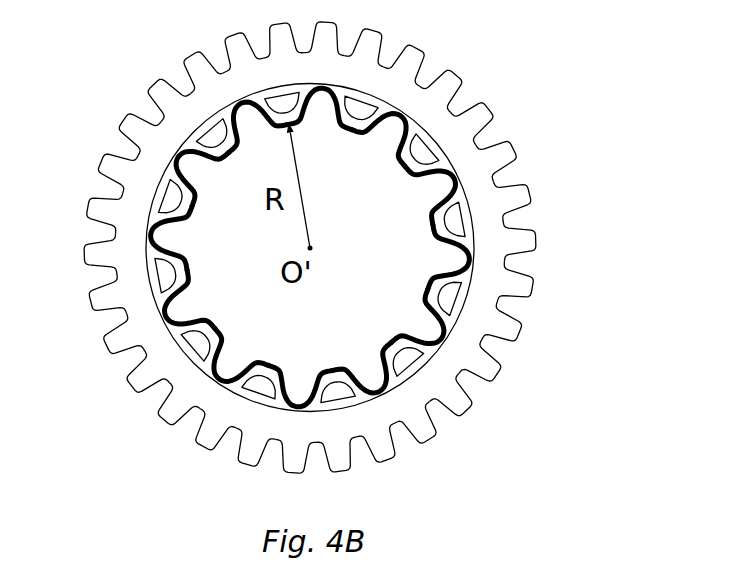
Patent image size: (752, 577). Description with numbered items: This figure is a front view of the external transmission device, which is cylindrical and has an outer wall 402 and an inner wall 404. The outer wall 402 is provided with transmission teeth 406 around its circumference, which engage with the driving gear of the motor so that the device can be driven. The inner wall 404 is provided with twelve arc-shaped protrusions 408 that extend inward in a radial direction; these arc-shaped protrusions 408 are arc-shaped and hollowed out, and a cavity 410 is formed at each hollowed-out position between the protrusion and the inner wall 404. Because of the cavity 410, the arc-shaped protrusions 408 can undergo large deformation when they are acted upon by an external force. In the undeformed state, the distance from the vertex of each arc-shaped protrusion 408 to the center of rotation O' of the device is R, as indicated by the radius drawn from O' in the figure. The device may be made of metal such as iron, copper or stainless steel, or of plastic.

The outer wall 402 is at (346, 237).
The inner wall 404 is at (473, 233).
The transmission teeth 406 is at (462, 72).
The arc-shaped protrusions 408 is at (446, 274).
The cavity 410 is at (447, 298).